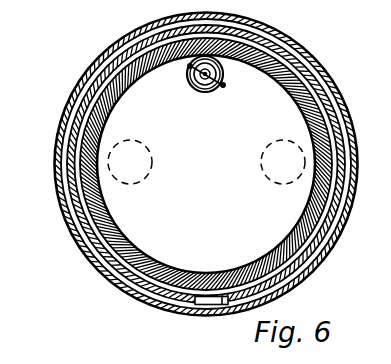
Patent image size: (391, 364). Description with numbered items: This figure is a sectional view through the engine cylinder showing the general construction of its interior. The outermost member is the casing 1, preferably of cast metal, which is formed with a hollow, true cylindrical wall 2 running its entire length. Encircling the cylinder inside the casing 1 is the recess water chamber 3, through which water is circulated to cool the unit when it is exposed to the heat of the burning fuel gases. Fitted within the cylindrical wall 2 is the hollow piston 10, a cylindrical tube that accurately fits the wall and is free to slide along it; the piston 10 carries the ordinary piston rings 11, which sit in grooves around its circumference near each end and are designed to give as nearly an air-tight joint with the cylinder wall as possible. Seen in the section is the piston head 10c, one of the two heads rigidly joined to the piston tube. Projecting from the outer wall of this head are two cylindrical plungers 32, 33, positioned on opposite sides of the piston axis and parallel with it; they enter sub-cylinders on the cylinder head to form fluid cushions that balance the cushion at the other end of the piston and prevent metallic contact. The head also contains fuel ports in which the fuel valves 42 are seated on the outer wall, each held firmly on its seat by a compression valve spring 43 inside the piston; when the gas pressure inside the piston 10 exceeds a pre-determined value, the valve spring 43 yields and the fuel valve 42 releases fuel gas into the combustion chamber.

The casing 1 is at (314, 55).
The cylindrical wall 2 is at (327, 88).
The recess water chamber 3 is at (333, 99).
The hollow piston 10 is at (78, 142).
The piston head 10c is at (103, 154).
The piston rings 11 is at (340, 130).
The cylindrical plunger 32 is at (310, 157).
The cylindrical plunger 33 is at (109, 174).
The fuel valve 42 is at (225, 85).
The valve spring 43 is at (222, 70).